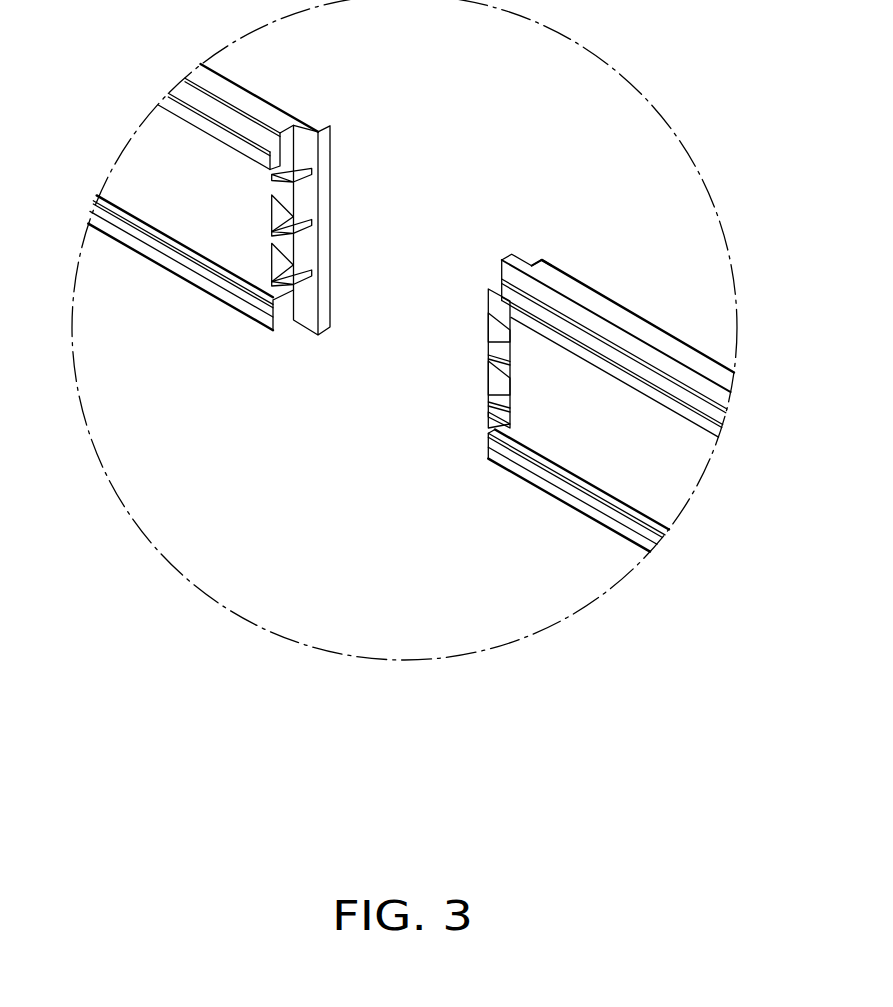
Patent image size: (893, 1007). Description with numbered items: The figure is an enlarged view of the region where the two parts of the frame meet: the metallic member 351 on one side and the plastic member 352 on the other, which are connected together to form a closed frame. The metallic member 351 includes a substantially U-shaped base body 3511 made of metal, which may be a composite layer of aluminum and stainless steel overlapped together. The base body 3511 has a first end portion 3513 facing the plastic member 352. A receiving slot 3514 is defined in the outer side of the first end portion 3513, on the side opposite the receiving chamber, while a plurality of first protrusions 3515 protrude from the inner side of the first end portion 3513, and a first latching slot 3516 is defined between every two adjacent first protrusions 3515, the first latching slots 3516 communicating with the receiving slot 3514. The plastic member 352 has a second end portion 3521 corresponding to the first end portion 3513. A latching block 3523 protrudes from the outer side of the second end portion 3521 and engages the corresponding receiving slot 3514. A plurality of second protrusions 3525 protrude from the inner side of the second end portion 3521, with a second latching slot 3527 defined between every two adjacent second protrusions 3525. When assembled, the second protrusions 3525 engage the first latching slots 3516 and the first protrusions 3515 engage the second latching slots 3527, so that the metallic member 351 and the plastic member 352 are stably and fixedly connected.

The metallic member 351 is at (677, 462).
The base body 3511 is at (608, 308).
The first end portion 3513 is at (500, 276).
The receiving slot 3514 is at (521, 256).
The first protrusion 3515 is at (497, 395).
The first latching slot 3516 is at (503, 370).
The plastic member 352 is at (163, 137).
The second end portion 3521 is at (242, 94).
The latching block 3523 is at (318, 134).
The second protrusion 3525 is at (300, 196).
The second latching slot 3527 is at (278, 215).